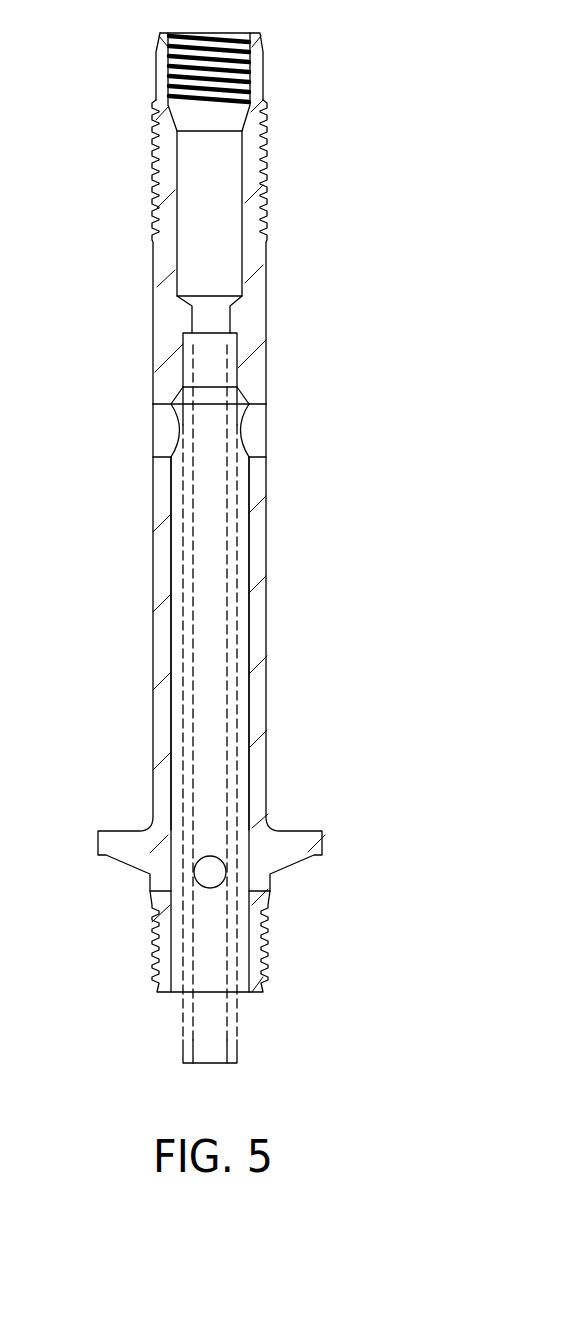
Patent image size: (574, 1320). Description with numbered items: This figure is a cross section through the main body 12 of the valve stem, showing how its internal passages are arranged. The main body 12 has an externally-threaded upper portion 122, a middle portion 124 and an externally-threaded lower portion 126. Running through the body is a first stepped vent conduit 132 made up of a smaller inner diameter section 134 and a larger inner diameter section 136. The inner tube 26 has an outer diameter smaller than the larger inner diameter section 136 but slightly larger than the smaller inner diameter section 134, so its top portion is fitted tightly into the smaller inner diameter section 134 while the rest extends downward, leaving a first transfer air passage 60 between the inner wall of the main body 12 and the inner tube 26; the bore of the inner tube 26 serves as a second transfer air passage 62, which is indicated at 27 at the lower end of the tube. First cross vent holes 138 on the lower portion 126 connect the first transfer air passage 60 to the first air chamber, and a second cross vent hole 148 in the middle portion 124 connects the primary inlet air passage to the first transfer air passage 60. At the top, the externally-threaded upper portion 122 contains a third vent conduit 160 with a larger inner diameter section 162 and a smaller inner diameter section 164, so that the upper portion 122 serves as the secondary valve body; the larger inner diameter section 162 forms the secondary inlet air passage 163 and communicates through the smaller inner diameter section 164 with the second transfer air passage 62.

The main body 12 is at (120, 551).
The externally-threaded upper portion 122 is at (153, 271).
The middle portion 124 is at (153, 653).
The externally-threaded lower portion 126 is at (152, 913).
The first stepped vent conduit 132 is at (306, 686).
The smaller inner diameter section 134 is at (238, 348).
The larger inner diameter section 136 is at (250, 553).
The first cross vent holes 138 is at (162, 865).
The second cross vent hole 148 is at (174, 428).
The third vent conduit 160 is at (301, 183).
The larger inner diameter section 162 is at (216, 176).
The secondary inlet air passage 163 is at (263, 91).
The smaller inner diameter section 164 is at (268, 289).
The first transfer air passage 60 is at (252, 657).
The second transfer air passage 62 is at (216, 728).
The inner tube 26 is at (250, 1049).
The tube passage 27 is at (183, 1040).